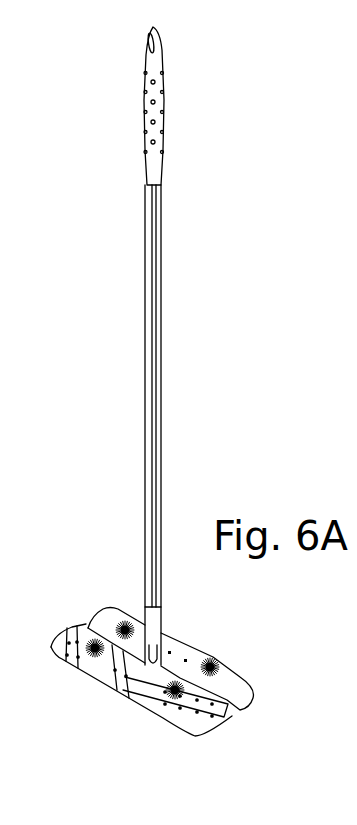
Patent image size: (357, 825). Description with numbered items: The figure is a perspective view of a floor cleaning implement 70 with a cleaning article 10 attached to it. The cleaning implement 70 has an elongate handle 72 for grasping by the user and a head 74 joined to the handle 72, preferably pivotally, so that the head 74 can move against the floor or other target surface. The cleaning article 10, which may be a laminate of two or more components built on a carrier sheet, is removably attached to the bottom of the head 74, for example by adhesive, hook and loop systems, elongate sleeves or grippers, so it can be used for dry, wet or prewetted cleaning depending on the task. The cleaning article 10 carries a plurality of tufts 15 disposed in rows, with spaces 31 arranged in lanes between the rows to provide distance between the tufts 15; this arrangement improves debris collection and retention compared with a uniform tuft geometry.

The cleaning implement 70 is at (252, 142).
The handle 72 is at (154, 412).
The cleaning article 10 is at (172, 642).
The tufts 15 is at (186, 660).
The spaces 31 is at (72, 664).
The head 74 is at (228, 712).